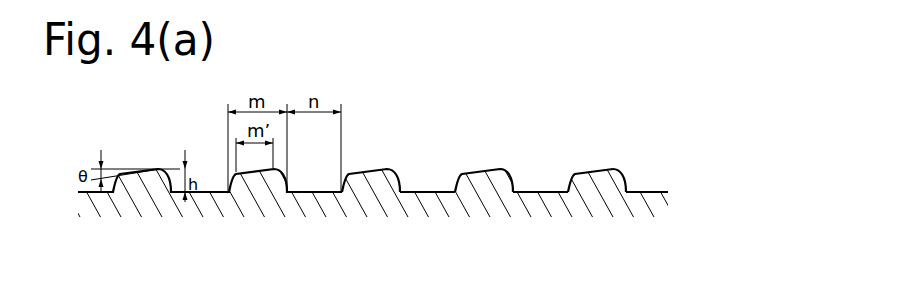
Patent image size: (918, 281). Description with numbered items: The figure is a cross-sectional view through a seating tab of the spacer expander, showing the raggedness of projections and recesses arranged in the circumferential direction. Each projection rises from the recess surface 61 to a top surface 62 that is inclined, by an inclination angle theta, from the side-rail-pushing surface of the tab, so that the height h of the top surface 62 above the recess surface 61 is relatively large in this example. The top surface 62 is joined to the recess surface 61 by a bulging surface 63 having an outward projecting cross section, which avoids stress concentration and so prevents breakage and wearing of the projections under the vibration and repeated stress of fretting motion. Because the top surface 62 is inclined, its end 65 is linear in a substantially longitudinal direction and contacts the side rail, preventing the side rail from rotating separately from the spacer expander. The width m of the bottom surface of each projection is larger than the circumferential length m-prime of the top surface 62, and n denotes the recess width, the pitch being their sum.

The recess surface 61 is at (428, 190).
The top surface 62 is at (365, 168).
The bulging surface 63 is at (626, 177).
The end 65 is at (615, 168).